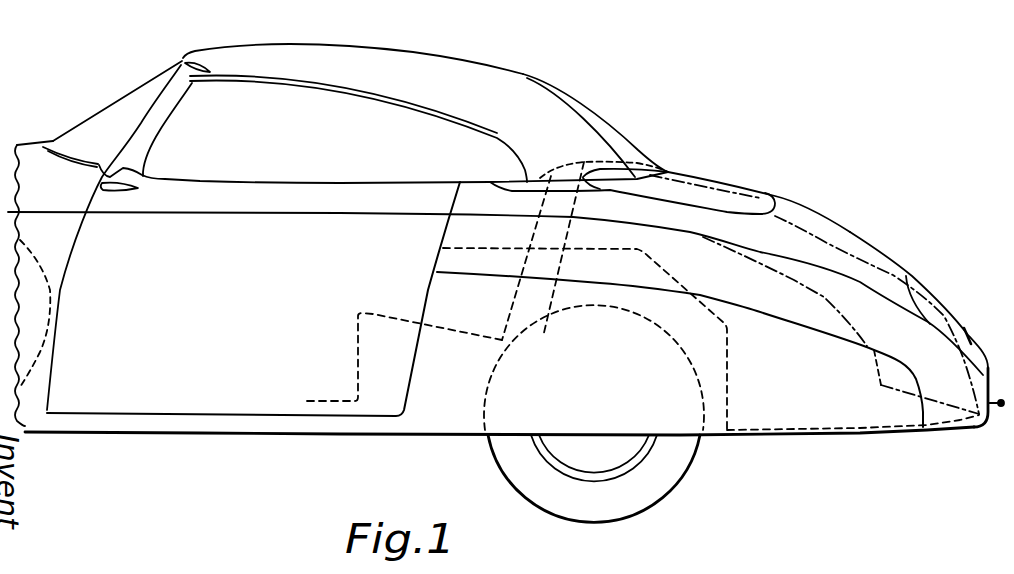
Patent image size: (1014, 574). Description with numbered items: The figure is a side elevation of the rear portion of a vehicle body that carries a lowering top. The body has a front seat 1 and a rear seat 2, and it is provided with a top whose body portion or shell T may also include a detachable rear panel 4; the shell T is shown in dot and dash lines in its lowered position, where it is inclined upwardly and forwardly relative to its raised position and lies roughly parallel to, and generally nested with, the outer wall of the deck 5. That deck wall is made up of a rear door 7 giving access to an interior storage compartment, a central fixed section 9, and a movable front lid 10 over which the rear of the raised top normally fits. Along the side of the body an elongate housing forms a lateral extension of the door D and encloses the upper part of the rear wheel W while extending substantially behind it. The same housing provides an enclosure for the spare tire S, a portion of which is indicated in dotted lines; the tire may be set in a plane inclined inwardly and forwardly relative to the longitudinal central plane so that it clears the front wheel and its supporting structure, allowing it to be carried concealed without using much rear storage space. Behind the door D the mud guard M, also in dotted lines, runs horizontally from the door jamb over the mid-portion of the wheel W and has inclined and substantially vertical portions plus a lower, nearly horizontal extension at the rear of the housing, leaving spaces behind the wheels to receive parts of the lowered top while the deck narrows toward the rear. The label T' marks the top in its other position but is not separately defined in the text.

The top rear section T' is at (353, 44).
The detachable rear panel 4 is at (603, 117).
The movable front lid 10 is at (688, 177).
The body portion or shell T is at (729, 176).
The central fixed section 9 is at (813, 222).
The deck 5 is at (853, 228).
The rear door 7 is at (944, 309).
The rear seat 2 is at (541, 209).
The door D is at (205, 182).
The front seat 1 is at (310, 182).
The spare tire S is at (38, 301).
The mud guard M is at (654, 259).
The rear wheel W is at (684, 457).